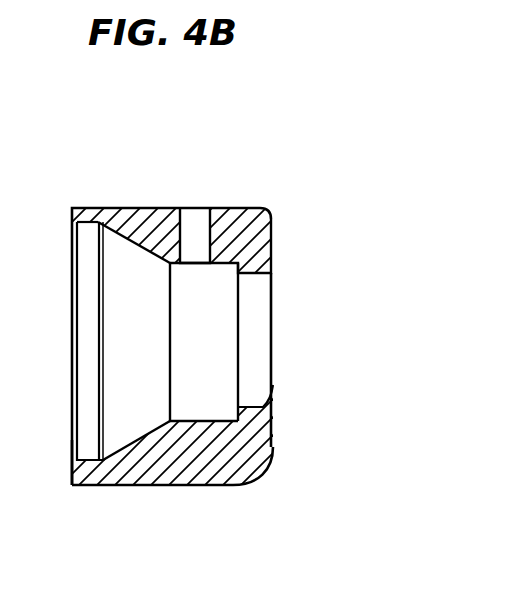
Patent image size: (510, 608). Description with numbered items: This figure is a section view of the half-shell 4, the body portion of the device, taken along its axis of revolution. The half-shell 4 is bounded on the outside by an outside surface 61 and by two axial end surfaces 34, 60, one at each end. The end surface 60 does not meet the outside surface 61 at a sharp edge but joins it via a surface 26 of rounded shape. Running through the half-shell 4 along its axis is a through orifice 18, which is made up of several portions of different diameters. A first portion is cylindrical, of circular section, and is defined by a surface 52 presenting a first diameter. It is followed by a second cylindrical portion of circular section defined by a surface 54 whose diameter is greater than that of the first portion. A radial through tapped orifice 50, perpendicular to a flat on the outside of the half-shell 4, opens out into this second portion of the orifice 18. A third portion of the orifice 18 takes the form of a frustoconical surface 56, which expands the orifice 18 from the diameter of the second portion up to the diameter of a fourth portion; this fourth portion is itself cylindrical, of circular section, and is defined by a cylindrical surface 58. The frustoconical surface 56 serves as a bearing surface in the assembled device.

The half-shell 4 is at (131, 179).
The through orifice 18 is at (273, 330).
The surface of rounded shape 26 is at (268, 214).
The axial end surface 34 is at (72, 470).
The radial through tapped orifice 50 is at (194, 209).
The surface of cylindrical first portion 52 is at (273, 377).
The surface of second cylindrical portion 54 is at (199, 421).
The frustoconical surface 56 is at (162, 423).
The cylindrical surface 58 is at (72, 265).
The axial end surface 60 is at (268, 457).
The outside surface 61 is at (167, 487).